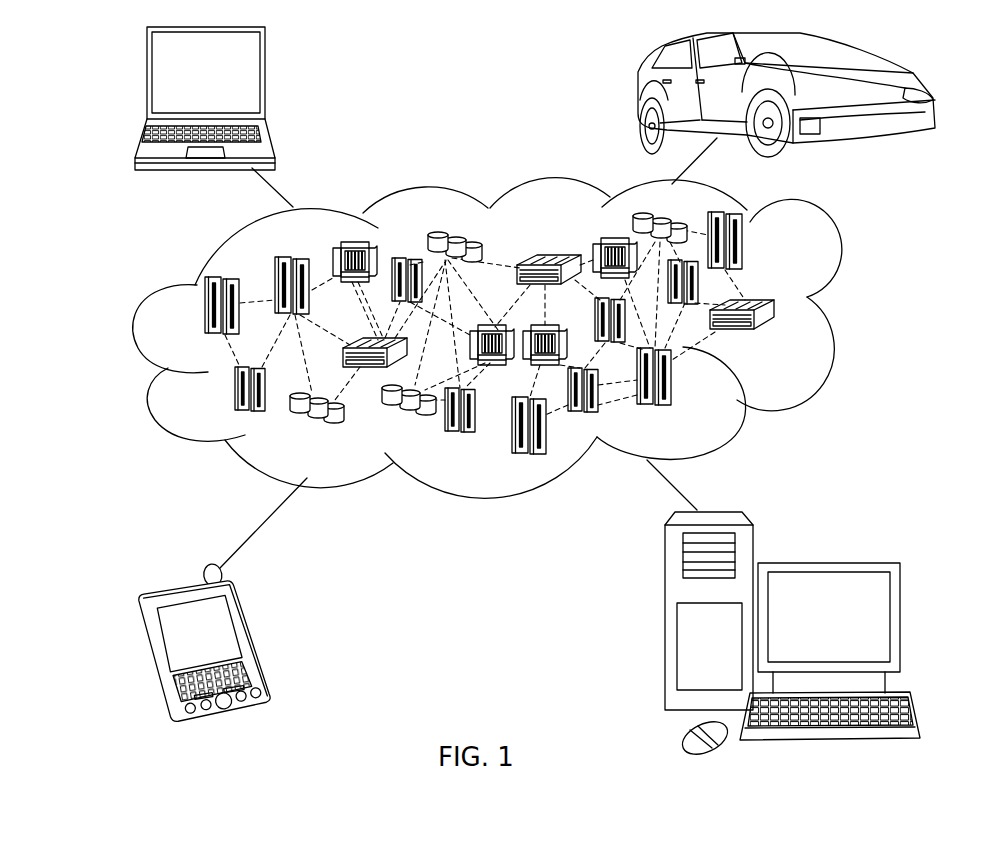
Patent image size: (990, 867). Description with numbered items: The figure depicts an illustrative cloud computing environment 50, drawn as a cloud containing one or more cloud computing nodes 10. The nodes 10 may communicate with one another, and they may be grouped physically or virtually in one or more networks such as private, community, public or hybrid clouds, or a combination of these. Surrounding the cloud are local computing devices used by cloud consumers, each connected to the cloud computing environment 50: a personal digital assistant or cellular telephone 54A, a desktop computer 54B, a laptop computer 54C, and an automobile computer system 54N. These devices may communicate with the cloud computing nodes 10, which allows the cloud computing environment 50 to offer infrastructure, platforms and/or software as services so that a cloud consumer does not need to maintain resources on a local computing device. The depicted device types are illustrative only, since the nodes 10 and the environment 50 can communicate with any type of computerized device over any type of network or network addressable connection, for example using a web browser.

The cloud computing environment 50 is at (828, 314).
The cloud computing node 10 is at (782, 342).
The personal digital assistant or cellular telephone 54A is at (257, 643).
The desktop computer 54B is at (827, 563).
The laptop computer 54C is at (266, 80).
The automobile computer system 54N is at (641, 92).